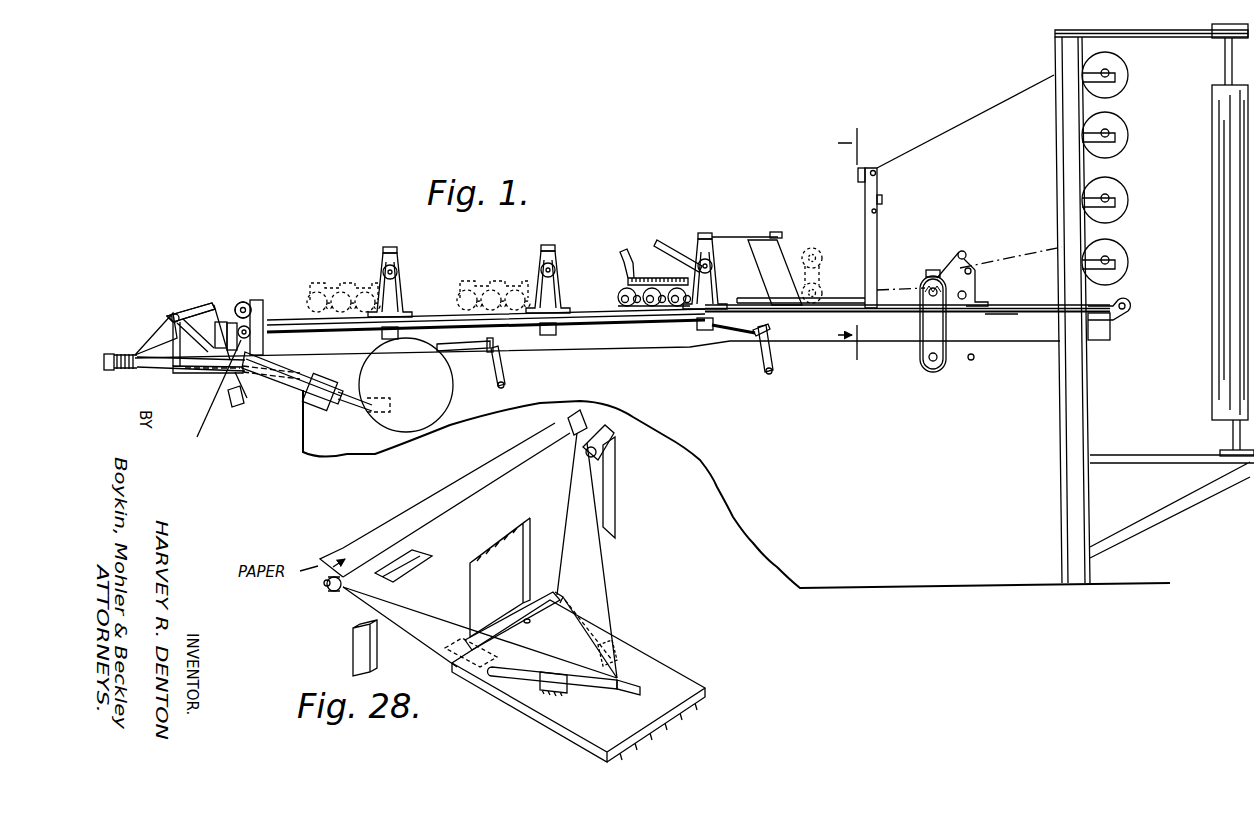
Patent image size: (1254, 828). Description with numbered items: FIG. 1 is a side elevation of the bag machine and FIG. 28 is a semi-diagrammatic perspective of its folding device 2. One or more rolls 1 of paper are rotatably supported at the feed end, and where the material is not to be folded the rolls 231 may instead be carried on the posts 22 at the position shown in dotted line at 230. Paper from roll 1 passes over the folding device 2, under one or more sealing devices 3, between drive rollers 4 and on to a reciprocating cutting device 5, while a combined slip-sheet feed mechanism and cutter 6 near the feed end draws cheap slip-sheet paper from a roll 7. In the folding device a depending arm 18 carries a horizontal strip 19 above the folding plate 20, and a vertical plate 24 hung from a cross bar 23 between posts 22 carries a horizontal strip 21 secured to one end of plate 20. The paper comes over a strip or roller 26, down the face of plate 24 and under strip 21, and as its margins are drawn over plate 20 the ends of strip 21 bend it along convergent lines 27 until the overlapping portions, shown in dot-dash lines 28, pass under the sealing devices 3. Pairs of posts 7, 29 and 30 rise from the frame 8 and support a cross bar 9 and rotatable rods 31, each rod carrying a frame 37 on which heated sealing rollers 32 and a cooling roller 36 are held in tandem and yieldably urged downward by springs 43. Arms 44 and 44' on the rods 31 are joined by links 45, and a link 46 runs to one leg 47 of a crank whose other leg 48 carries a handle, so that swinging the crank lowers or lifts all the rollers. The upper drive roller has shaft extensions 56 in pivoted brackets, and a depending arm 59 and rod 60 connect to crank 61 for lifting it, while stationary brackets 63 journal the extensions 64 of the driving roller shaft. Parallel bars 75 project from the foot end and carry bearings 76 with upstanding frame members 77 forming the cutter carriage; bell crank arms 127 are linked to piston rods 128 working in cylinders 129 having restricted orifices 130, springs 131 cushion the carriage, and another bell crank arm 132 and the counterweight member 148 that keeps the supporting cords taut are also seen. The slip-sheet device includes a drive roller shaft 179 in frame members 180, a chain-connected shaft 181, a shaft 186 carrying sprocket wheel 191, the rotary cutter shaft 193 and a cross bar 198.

In FIG. 1, the rolls of paper 1 is at (1208, 97).
In FIG. 1, the folding device 2 is at (793, 212).
In FIG. 1, the sealing devices 3 is at (642, 183).
In FIG. 1, the drive rollers 4 is at (265, 285).
In FIG. 1, the reciprocating cutting device 5 is at (190, 293).
In FIG. 1, the combined slip-sheet feed mechanism and cutter 6 is at (291, 331).
In FIG. 1, the posts 7 is at (718, 299).
In FIG. 1, the frame 8 is at (801, 341).
In FIG. 1, the cross bar 9 is at (697, 246).
In FIG. 1, the depending arm 18 is at (792, 253).
In FIG. 28, the depending arm 18 is at (609, 661).
In FIG. 1, the horizontally extending strip 19 is at (831, 299).
In FIG. 28, the horizontally extending strip 19 is at (598, 634).
In FIG. 28, the horizontal folding board or plate 20 is at (672, 700).
In FIG. 28, the horizontal strip 21 is at (565, 599).
In FIG. 1, the posts 22 is at (877, 242).
In FIG. 28, the posts 22 is at (612, 497).
In FIG. 28, the cross bar 23 is at (612, 440).
In FIG. 28, the vertical plate 24 is at (522, 562).
In FIG. 1, the horizontal strip or roller 26 is at (878, 166).
In FIG. 28, the horizontal strip or roller 26 is at (341, 590).
In FIG. 28, the bending lines 27 is at (568, 578).
In FIG. 28, the dot-dash lines 28 is at (629, 683).
In FIG. 1, the posts 29 is at (562, 290).
In FIG. 1, the posts 30 is at (405, 293).
In FIG. 1, the rotatable rod 31 is at (398, 268).
In FIG. 1, the sealing rollers 32 is at (677, 307).
In FIG. 1, the cooling roller 36 is at (620, 299).
In FIG. 1, the frame 37 is at (648, 277).
In FIG. 1, the springs 43 is at (626, 255).
In FIG. 1, the arm 44 is at (711, 356).
In FIG. 1, the arm 44' is at (564, 349).
In FIG. 1, the links 45 is at (502, 330).
In FIG. 1, the link 46 is at (745, 334).
In FIG. 1, the crank leg 47 is at (758, 333).
In FIG. 1, the crank leg 48 is at (773, 362).
In FIG. 1, the shaft extensions 56 is at (240, 303).
In FIG. 1, the arm 59 is at (256, 300).
In FIG. 1, the rod 60 is at (462, 352).
In FIG. 1, the crank 61 is at (490, 367).
In FIG. 1, the stationary brackets 63 is at (246, 342).
In FIG. 1, the shaft extensions 64 is at (243, 362).
In FIG. 1, the parallel bars 75 is at (153, 368).
In FIG. 1, the bearings 76 is at (188, 374).
In FIG. 1, the upstanding frame member 77 is at (203, 305).
In FIG. 1, the bell crank arms 127 is at (176, 338).
In FIG. 1, the piston rods 128 is at (209, 397).
In FIG. 1, the cylinders 129 is at (287, 392).
In FIG. 1, the restricted orifice 130 is at (349, 396).
In FIG. 1, the springs 131 is at (126, 371).
In FIG. 1, the bell crank arm 132 is at (162, 327).
In FIG. 1, the counterweight member 148 is at (235, 401).
In FIG. 1, the shaft 179 is at (965, 299).
In FIG. 1, the frame members 180 is at (977, 276).
In FIG. 1, the shaft 181 is at (974, 360).
In FIG. 1, the shaft 186 is at (926, 366).
In FIG. 1, the sprocket wheel 191 is at (940, 366).
In FIG. 1, the shaft 193 is at (933, 287).
In FIG. 1, the cross bar 198 is at (975, 268).
In FIG. 1, the dotted-line position 230 is at (823, 262).
In FIG. 1, the rolls 231 is at (822, 252).